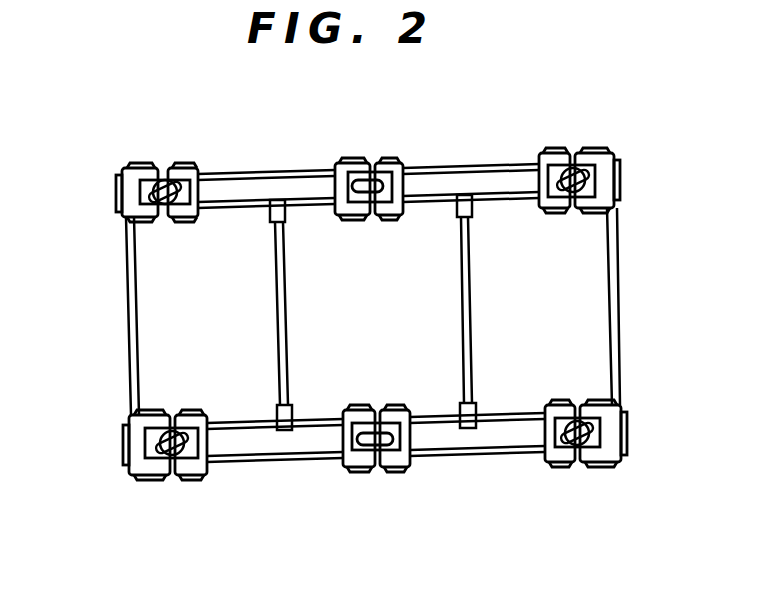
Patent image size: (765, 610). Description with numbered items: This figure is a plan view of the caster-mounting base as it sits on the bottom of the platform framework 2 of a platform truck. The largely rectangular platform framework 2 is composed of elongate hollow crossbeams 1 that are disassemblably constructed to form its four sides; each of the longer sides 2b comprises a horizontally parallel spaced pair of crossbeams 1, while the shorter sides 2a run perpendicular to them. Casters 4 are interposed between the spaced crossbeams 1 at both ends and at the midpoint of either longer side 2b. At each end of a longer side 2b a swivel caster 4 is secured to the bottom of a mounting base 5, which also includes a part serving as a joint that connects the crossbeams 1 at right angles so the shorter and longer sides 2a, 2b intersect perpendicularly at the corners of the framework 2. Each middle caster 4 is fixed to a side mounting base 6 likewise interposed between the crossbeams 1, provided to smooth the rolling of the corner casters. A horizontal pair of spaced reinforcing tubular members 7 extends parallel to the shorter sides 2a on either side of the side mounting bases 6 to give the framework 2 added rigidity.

The crossbeam 1 is at (505, 411).
The platform framework 2 is at (128, 313).
The shorter side 2a is at (622, 255).
The longer side 2b is at (497, 457).
The caster 4 is at (573, 166).
The mounting base 5 is at (156, 164).
The side mounting base 6 is at (368, 153).
The reinforcing tubular member 7 is at (289, 317).